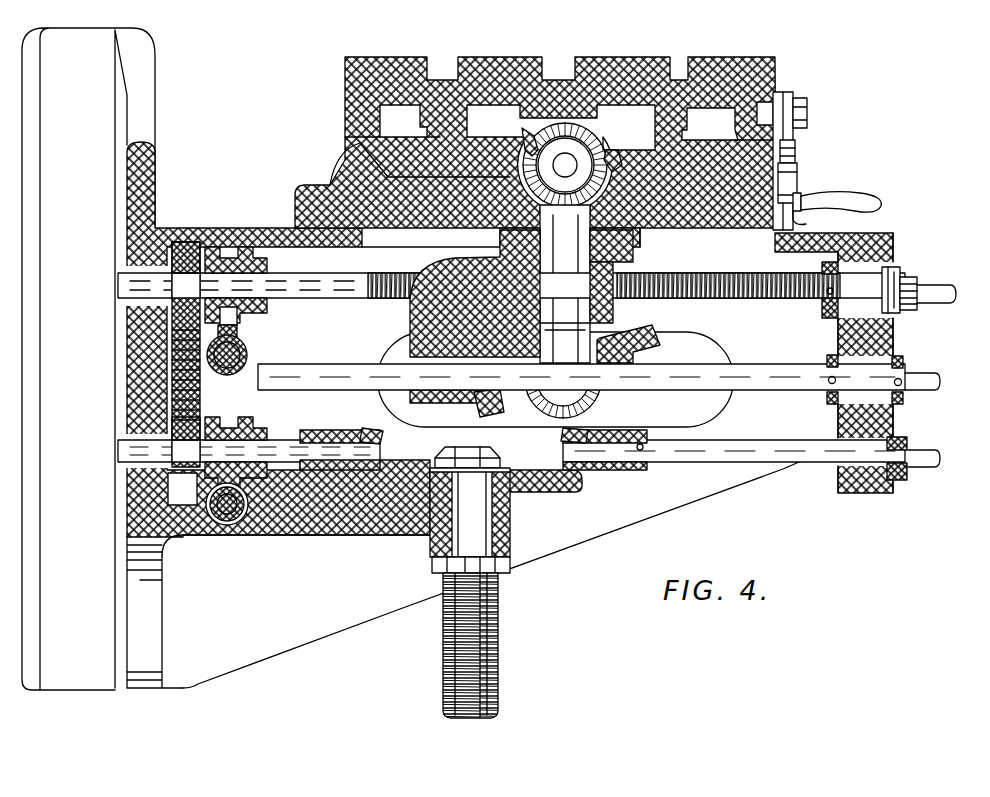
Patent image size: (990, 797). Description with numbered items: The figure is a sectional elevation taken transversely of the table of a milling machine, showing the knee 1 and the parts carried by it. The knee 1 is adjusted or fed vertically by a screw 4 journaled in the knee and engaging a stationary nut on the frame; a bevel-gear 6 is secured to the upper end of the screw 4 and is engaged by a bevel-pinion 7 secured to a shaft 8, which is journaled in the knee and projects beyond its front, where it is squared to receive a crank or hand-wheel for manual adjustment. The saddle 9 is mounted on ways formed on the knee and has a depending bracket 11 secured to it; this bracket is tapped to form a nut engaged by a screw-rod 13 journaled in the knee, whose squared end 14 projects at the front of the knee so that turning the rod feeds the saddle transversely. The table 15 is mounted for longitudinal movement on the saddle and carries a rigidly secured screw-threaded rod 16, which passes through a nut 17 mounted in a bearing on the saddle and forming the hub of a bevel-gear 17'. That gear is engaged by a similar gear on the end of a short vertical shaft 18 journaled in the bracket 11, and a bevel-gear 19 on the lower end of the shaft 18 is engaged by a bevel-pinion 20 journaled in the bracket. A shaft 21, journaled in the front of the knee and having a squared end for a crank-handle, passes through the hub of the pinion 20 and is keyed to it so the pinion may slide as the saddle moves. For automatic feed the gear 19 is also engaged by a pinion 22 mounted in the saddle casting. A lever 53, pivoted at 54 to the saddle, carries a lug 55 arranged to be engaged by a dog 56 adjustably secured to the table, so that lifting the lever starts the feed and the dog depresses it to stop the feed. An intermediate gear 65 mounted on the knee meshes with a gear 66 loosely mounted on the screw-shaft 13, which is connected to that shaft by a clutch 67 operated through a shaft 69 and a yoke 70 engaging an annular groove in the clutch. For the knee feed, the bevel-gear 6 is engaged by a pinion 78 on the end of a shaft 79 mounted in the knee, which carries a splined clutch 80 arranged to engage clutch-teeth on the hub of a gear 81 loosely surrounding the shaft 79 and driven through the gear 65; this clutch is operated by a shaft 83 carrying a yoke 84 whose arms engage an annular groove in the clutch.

The knee 1 is at (372, 620).
The screw 4 is at (478, 653).
The bevel-gear 6 is at (517, 477).
The bevel-pinion 7 is at (567, 432).
The shaft 8 is at (668, 456).
The saddle 9 is at (340, 182).
The bracket 11 is at (482, 263).
The screw-rod 13 is at (707, 282).
The squared end 14 is at (933, 290).
The table 15 is at (713, 66).
The screw-threaded rod 16 is at (594, 148).
The nut 17 is at (524, 135).
The bevel-gear 17' is at (623, 153).
The short vertical shaft 18 is at (578, 250).
The bevel-gear 19 is at (634, 338).
The bevel-pinion 20 is at (491, 403).
The shaft 21 is at (760, 375).
The pinion 22 is at (605, 403).
The lever 53 is at (837, 213).
The pivot 54 is at (798, 178).
The lug 55 is at (796, 157).
The dog 56 is at (787, 97).
The intermediate gear 65 is at (200, 385).
The gear 66 is at (187, 253).
The clutch 67 is at (256, 262).
The shaft 69 is at (244, 348).
The yoke 70 is at (236, 318).
The pinion 78 is at (381, 435).
The shaft 79 is at (280, 452).
The clutch 80 is at (250, 416).
The gear 81 is at (192, 418).
The shaft 83 is at (225, 521).
The yoke 84 is at (234, 484).